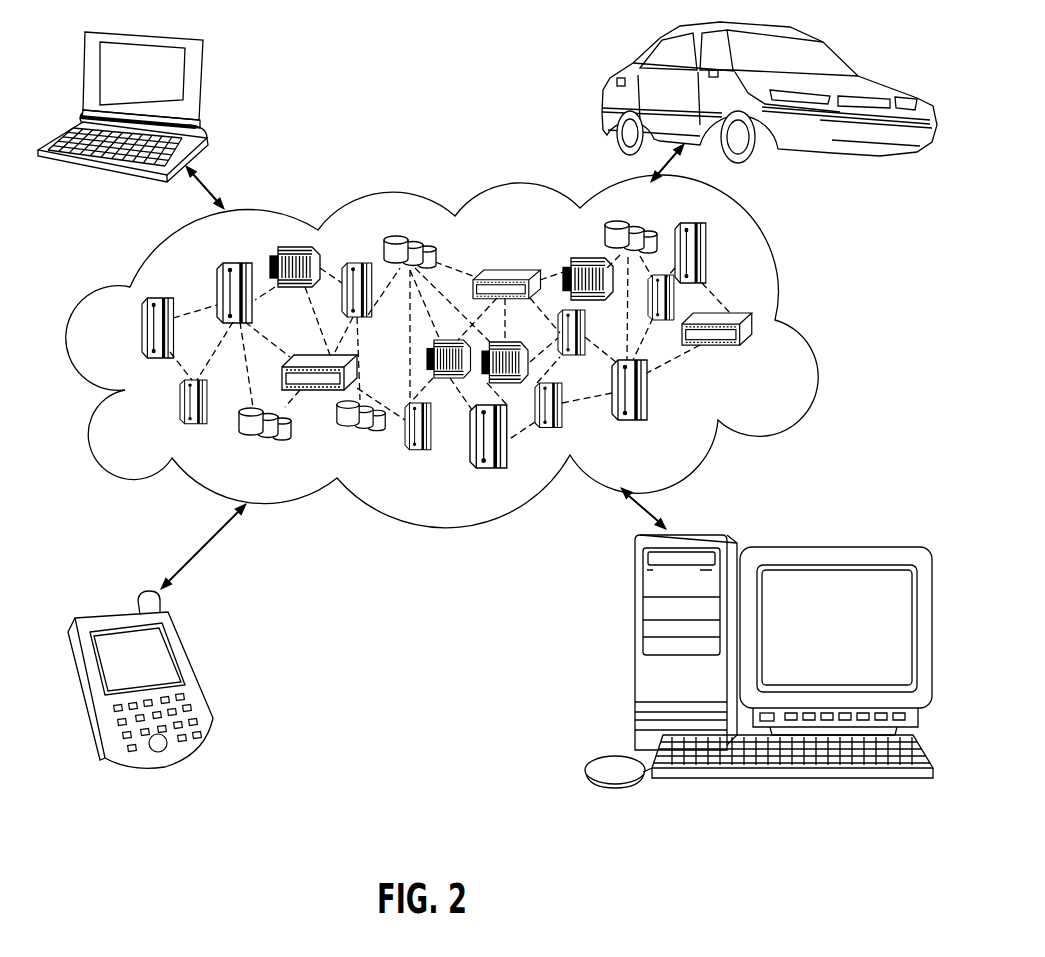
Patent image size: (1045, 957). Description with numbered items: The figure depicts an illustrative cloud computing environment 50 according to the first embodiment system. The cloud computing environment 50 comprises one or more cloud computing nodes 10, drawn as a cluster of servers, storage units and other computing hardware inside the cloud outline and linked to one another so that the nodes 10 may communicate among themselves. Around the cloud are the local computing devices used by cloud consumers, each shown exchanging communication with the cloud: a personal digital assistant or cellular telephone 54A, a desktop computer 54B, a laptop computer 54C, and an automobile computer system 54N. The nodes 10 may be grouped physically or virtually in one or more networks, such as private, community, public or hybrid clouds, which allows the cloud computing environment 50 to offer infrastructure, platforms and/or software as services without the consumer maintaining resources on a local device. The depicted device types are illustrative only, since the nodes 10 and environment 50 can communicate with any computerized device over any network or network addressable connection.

The cloud computing node 10 is at (780, 354).
The cloud computing environment 50 is at (798, 288).
The personal digital assistant or cellular telephone 54A is at (193, 670).
The desktop computer 54B is at (635, 650).
The laptop computer 54C is at (202, 78).
The automobile computer system 54N is at (612, 86).